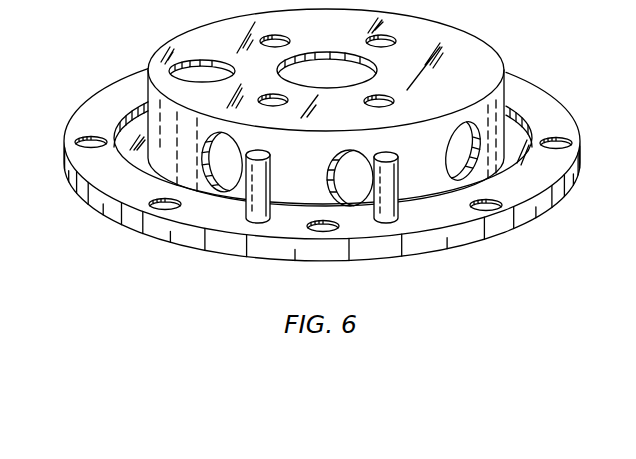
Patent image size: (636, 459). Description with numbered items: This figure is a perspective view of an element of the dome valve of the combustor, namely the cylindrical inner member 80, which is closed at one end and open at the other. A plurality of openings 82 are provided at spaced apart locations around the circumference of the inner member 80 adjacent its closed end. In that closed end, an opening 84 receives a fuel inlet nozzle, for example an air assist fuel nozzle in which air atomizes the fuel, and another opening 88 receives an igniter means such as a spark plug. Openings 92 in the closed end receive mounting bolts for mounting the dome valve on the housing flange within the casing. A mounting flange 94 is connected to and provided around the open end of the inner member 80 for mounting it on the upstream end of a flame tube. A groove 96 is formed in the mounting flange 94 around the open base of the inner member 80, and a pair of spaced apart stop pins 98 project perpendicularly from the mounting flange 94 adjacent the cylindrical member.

The inner member 80 is at (497, 50).
The openings 82 is at (462, 172).
The opening 84 is at (370, 68).
The opening 88 is at (207, 70).
The openings 92 is at (289, 38).
The mounting flange 94 is at (558, 129).
The groove 96 is at (530, 122).
The stop pins 98 is at (271, 213).